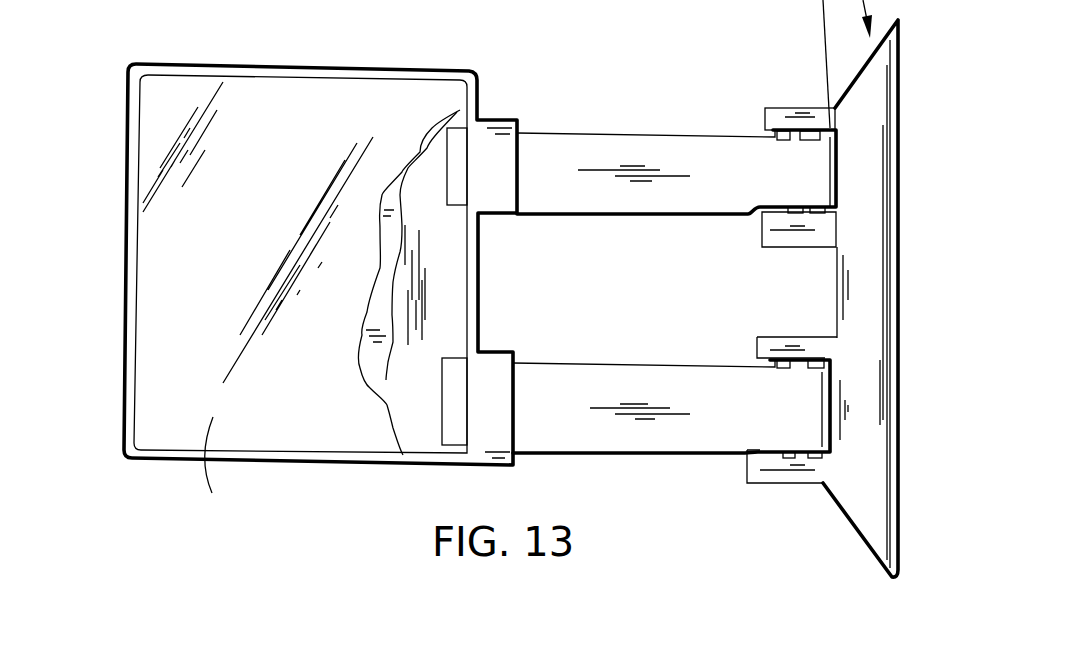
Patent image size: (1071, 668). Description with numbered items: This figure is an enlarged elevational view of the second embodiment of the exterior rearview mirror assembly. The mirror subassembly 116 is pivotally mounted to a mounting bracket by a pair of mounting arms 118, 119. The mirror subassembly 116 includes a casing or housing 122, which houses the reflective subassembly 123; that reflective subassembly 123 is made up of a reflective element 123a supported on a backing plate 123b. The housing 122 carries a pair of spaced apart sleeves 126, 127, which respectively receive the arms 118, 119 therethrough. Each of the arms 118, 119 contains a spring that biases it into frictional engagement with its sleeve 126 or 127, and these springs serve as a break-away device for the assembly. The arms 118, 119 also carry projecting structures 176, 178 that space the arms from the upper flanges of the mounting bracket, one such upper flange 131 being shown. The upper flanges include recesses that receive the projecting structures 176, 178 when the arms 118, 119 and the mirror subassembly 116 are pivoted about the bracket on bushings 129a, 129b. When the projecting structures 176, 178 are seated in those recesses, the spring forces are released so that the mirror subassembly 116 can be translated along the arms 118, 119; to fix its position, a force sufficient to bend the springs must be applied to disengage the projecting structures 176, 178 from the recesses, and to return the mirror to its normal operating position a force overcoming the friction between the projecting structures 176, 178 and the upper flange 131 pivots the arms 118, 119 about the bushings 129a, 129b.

The mirror subassembly 116 is at (108, 143).
The mounting arm 118 is at (588, 150).
The mounting arm 119 is at (558, 417).
The housing 122 is at (124, 325).
The reflective subassembly 123 is at (427, 100).
The reflective element 123a is at (240, 470).
The backing plate 123b is at (375, 352).
The sleeve 126 is at (488, 124).
The sleeve 127 is at (480, 355).
The bushing 129a is at (800, 207).
The bushing 129b is at (800, 452).
The upper flange 131 is at (778, 345).
The projecting structure 176 is at (777, 128).
The projecting structure 178 is at (828, 338).